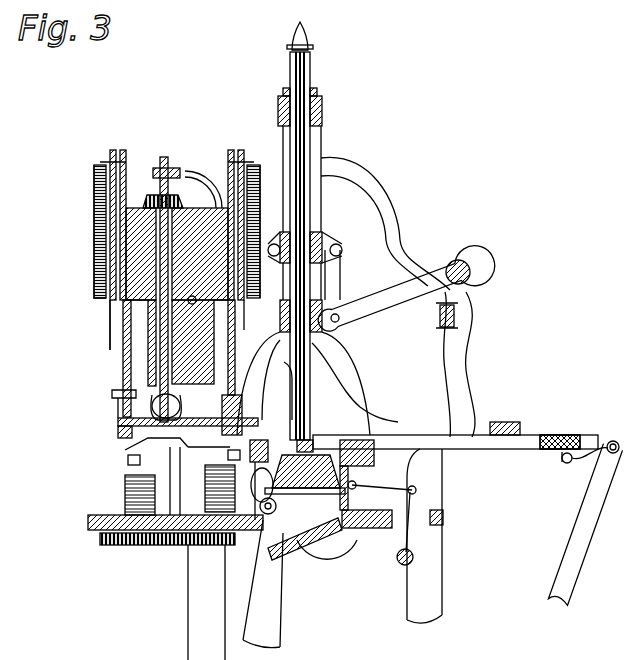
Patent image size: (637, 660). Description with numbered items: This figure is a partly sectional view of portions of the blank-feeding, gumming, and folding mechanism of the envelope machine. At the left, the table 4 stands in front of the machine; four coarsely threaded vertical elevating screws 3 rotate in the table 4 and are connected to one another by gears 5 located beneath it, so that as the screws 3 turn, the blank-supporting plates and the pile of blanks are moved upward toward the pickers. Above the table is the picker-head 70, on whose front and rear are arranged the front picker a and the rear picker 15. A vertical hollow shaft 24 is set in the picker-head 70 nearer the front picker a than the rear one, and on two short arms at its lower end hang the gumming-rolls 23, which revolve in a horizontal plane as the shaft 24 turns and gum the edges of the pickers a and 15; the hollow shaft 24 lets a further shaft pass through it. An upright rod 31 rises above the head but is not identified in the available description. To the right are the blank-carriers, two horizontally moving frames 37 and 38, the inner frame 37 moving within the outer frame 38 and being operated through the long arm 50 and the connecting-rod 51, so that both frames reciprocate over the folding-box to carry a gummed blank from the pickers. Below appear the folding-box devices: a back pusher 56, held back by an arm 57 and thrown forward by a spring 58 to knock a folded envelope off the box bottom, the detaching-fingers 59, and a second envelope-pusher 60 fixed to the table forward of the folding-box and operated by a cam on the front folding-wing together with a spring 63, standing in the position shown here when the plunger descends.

The elevating screw 3 is at (135, 471).
The table 4 is at (92, 527).
The gear 5 is at (135, 545).
The rear picker 15 is at (274, 348).
The gumming-roll 23 is at (180, 402).
The vertical hollow shaft 24 is at (150, 200).
The rod 31 is at (310, 66).
The inner carrier-frame 37 is at (580, 440).
The outer carrier-frame 38 is at (520, 428).
The long arm 50 is at (590, 548).
The connecting-rod 51 is at (425, 544).
The back pusher 56 is at (225, 418).
The arm 57 is at (168, 162).
The spring 58 is at (208, 175).
The detaching-fingers 59 is at (352, 548).
The second envelope-pusher 60 is at (258, 480).
The spring 63 is at (263, 491).
The picker-head 70 is at (177, 294).
The front picker a is at (123, 357).